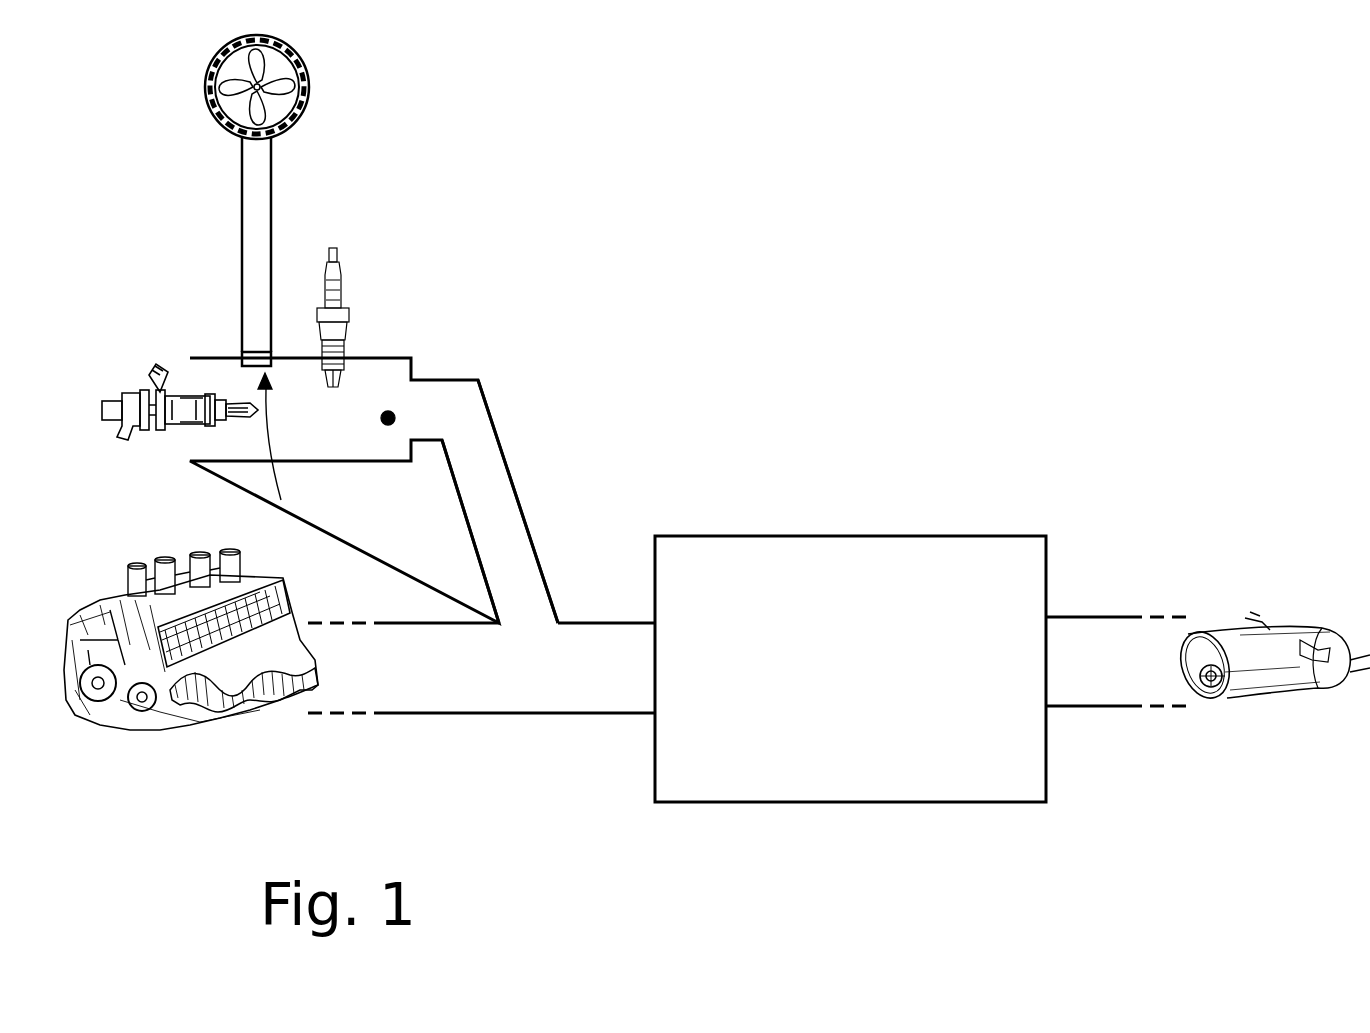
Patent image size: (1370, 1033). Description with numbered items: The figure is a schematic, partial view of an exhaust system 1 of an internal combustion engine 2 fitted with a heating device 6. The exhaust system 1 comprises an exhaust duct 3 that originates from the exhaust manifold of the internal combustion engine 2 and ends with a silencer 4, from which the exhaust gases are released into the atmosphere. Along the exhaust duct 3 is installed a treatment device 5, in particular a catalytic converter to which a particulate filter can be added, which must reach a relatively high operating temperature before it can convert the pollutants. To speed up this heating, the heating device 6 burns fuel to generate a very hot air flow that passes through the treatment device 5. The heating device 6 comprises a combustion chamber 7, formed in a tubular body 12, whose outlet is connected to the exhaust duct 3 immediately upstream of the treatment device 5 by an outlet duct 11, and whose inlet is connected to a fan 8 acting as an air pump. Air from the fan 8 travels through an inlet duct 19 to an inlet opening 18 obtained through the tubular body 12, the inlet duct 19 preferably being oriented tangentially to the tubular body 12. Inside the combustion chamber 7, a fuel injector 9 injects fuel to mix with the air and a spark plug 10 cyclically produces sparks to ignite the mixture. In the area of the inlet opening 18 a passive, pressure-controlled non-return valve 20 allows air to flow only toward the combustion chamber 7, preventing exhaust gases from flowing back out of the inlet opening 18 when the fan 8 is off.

The exhaust system 1 is at (1208, 160).
The internal combustion engine 2 is at (162, 662).
The exhaust duct 3 is at (551, 714).
The silencer 4 is at (1262, 676).
The treatment device 5 is at (897, 803).
The heating device 6 is at (152, 223).
The combustion chamber 7 is at (388, 425).
The fan 8 is at (252, 87).
The fuel injector 9 is at (157, 430).
The spark plug 10 is at (337, 306).
The outlet duct 11 is at (477, 558).
The tubular body 12 is at (337, 463).
The inlet opening 18 is at (278, 449).
The inlet duct 19 is at (242, 172).
The non-return valve 20 is at (257, 357).